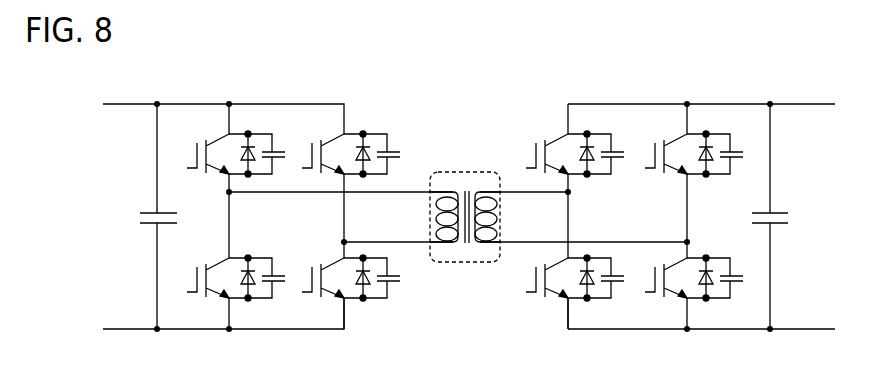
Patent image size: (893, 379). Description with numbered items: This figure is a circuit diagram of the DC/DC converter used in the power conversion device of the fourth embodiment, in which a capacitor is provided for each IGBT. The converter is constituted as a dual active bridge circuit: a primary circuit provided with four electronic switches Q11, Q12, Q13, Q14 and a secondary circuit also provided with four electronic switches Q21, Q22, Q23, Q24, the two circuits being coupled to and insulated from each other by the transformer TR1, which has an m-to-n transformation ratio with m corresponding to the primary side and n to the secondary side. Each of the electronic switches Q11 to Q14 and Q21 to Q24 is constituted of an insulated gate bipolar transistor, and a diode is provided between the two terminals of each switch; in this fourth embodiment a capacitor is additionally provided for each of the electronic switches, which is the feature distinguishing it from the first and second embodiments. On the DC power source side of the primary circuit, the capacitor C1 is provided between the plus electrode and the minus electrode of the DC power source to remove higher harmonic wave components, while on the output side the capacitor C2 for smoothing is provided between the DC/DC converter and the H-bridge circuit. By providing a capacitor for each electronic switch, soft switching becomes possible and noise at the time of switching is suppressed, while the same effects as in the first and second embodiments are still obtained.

The electronic switch Q11 is at (234, 144).
The electronic switch Q12 is at (234, 292).
The electronic switch Q13 is at (349, 144).
The electronic switch Q14 is at (349, 292).
The electronic switch Q21 is at (573, 144).
The electronic switch Q22 is at (573, 292).
The electronic switch Q23 is at (692, 144).
The electronic switch Q24 is at (692, 292).
The capacitor C1 is at (143, 216).
The capacitor C2 is at (785, 216).
The transformer TR1 is at (470, 170).